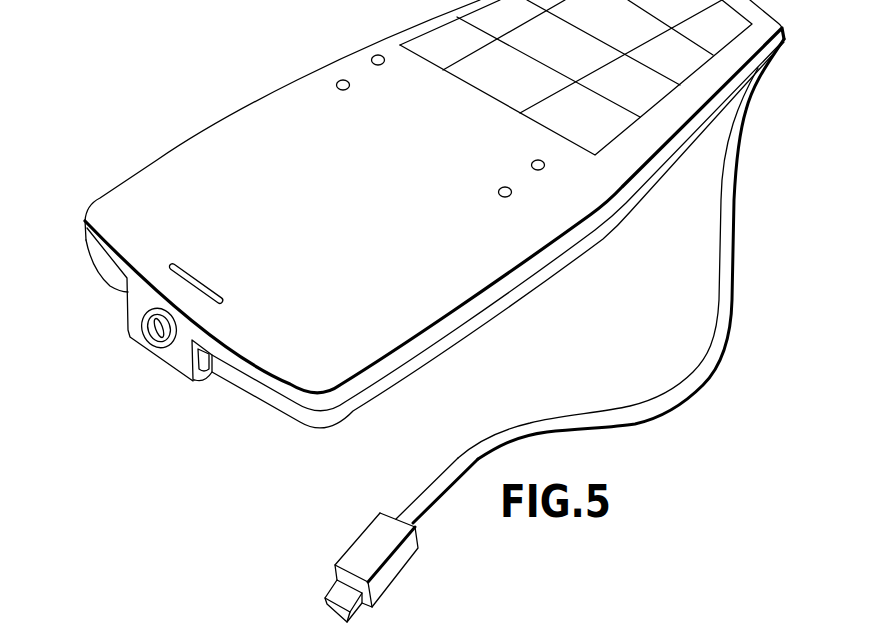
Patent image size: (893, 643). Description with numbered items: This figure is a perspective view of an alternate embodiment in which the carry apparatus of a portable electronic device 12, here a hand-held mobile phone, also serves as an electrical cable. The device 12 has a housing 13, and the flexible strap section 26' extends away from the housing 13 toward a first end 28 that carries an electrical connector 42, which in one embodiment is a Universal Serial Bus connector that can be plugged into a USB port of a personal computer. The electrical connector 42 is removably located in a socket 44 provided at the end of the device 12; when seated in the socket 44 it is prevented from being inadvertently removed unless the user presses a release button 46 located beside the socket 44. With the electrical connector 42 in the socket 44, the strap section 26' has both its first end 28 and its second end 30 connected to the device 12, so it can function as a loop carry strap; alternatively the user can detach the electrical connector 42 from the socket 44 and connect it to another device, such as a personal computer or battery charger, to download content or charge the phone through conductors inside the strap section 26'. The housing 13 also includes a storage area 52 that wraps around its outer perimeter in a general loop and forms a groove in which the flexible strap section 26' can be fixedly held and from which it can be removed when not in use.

The portable electronic device 12 is at (302, 73).
The housing 13 is at (158, 163).
The flexible strap section 26' is at (621, 249).
The first end 28 is at (397, 515).
The second end 30 is at (118, 280).
The electrical connector 42 is at (396, 580).
The socket 44 is at (212, 368).
The release button 46 is at (143, 330).
The storage area 52 is at (273, 397).